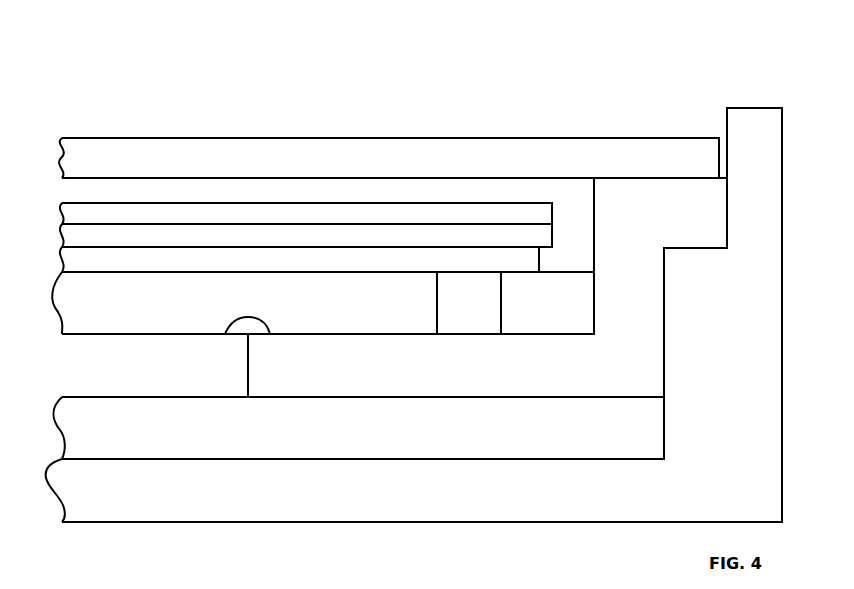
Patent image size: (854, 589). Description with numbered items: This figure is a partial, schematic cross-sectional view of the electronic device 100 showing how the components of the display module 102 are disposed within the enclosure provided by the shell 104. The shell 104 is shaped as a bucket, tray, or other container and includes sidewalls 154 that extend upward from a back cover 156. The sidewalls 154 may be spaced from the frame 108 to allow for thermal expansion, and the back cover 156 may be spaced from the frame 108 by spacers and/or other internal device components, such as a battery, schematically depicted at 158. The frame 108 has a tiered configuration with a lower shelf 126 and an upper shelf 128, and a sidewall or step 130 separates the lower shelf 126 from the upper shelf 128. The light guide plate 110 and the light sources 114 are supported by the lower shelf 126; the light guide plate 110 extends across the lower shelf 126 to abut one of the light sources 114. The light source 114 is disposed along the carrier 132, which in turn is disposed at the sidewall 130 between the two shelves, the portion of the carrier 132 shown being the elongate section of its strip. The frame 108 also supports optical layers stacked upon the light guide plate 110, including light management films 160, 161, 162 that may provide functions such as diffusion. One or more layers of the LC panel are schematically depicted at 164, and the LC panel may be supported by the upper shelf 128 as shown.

The electronic device 100 is at (680, 48).
The display module 102 is at (706, 96).
The shell 104 is at (782, 130).
The frame 108 is at (574, 370).
The light guide plate 110 is at (351, 311).
The light sources 114 is at (484, 311).
The lower shelf 126 is at (225, 334).
The upper shelf 128 is at (640, 178).
The sidewall 130 is at (592, 190).
The carrier 132 is at (562, 311).
The sidewalls 154 is at (766, 283).
The back cover 156 is at (413, 500).
The internal device components 158 is at (436, 437).
The light management film 160 is at (62, 270).
The light management film 161 is at (62, 246).
The light management film 162 is at (62, 214).
The LC panel layer 164 is at (62, 152).